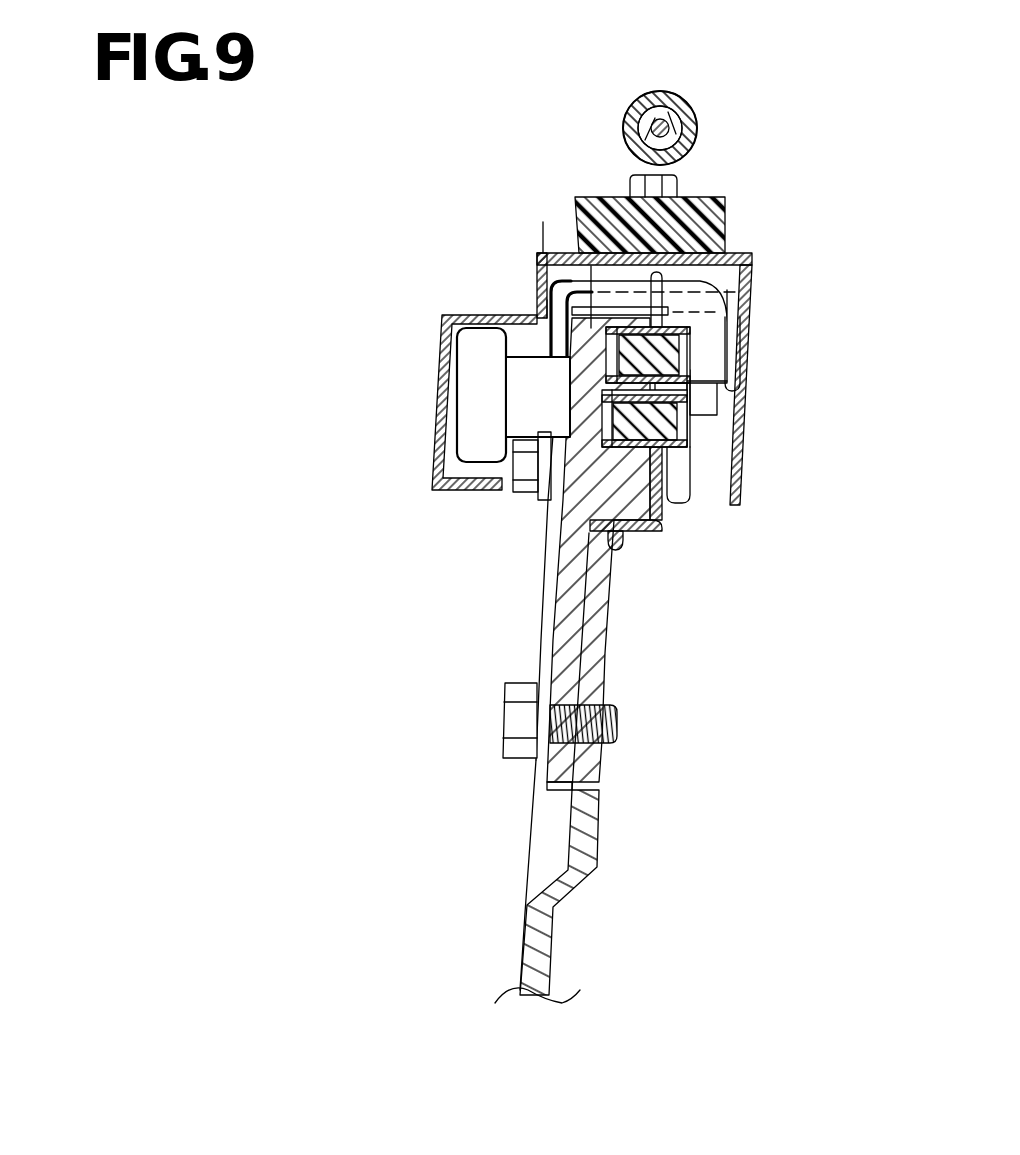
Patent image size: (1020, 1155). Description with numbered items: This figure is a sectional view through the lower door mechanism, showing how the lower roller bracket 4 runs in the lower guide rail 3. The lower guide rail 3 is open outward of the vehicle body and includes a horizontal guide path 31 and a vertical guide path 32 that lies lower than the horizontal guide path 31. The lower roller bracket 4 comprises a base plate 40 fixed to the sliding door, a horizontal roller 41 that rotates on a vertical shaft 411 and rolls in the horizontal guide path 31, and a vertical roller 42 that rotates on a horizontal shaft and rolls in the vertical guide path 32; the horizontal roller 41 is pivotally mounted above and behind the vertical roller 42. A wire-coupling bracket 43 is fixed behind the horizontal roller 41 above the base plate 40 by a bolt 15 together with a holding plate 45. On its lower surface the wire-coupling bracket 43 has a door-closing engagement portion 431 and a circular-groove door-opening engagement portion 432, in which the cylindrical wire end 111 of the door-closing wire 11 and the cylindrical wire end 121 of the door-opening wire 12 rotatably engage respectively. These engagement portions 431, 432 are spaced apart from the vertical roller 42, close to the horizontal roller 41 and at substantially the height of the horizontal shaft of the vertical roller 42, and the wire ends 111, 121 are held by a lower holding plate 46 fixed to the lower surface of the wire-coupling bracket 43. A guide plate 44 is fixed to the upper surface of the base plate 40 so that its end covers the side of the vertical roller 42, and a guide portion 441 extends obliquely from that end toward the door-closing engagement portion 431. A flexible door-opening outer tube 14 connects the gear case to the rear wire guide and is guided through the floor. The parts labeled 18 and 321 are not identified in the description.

The lower guide rail 3 is at (606, 558).
The lower roller bracket 4 is at (526, 660).
The door-closing wire 11 is at (613, 197).
The door-opening wire 12 is at (672, 129).
The door-opening outer tube 14 is at (660, 91).
The bolt 15 is at (520, 762).
The spacer 18 is at (525, 493).
The horizontal guide path 31 is at (460, 399).
The vertical guide path 32 is at (537, 273).
The base plate 40 is at (600, 797).
The horizontal roller 41 is at (468, 466).
The vertical roller 42 is at (743, 332).
The wire-coupling bracket 43 is at (545, 616).
The guide plate 44 is at (537, 274).
The holding plate 45 is at (542, 652).
The lower holding plate 46 is at (664, 533).
The wire end 111 is at (683, 504).
The wire end 121 is at (595, 385).
The block 321 is at (717, 227).
The vertical shaft 411 is at (530, 314).
The door-closing engagement portion 431 is at (690, 426).
The door-opening engagement portion 432 is at (690, 361).
The guide portion 441 is at (573, 214).